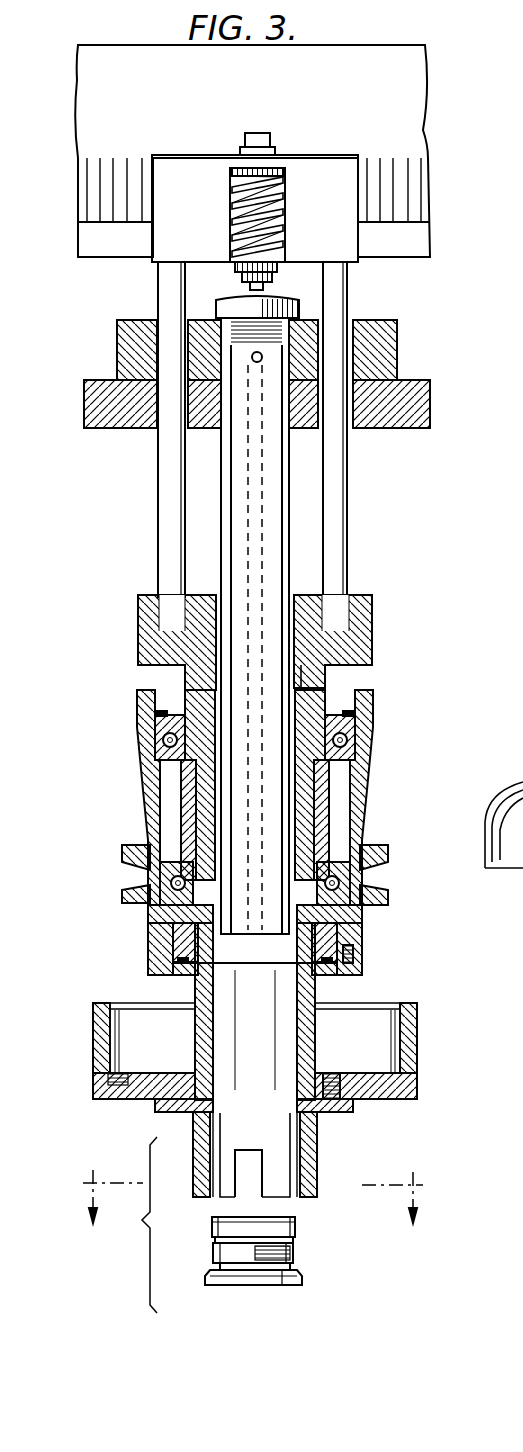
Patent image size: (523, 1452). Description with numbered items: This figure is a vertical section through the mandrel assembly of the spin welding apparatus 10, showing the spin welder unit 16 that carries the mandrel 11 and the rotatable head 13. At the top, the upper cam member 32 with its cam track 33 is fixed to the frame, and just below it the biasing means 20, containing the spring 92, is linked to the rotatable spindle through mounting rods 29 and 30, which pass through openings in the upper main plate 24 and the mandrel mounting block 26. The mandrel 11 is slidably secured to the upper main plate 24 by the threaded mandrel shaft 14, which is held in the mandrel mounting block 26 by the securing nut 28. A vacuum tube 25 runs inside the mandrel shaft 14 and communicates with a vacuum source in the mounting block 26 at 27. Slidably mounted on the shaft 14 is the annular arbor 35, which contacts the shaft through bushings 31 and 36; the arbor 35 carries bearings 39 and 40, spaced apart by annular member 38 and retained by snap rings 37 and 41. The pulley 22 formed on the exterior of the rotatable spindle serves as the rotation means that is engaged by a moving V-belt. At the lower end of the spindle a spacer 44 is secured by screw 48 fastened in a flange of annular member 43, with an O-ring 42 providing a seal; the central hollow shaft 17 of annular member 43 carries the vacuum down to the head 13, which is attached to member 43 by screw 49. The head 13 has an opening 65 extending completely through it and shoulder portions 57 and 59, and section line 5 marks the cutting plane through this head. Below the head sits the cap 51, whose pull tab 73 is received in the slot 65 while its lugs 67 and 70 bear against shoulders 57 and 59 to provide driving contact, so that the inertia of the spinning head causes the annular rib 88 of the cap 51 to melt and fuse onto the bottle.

The upper cam member 32 is at (408, 100).
The cam track 33 is at (393, 222).
The biasing means 20 is at (146, 265).
The spring 92 is at (277, 218).
The securing nut 28 is at (300, 312).
The mandrel mounting block 26 is at (397, 338).
The upper main plate 24 is at (420, 390).
The vacuum source connection 27 is at (252, 356).
The threaded mandrel shaft 14 is at (220, 507).
The vacuum tube 25 is at (248, 535).
The mounting rod 29 is at (163, 468).
The mounting rod 30 is at (337, 463).
The spin welder unit 16 is at (138, 620).
The mandrel 11 is at (373, 638).
The annular arbor 35 is at (360, 620).
The bushing 36 is at (310, 670).
The apparatus 10 is at (380, 740).
The snap ring 37 is at (158, 712).
The bearing 39 is at (163, 741).
The bushing 31 is at (217, 820).
The annular member 38 is at (327, 797).
The bearing 40 is at (168, 885).
The pulley 22 is at (357, 898).
The snap ring 41 is at (198, 913).
The O-ring 42 is at (193, 962).
The spacer 44 is at (307, 933).
The screw 48 is at (350, 970).
The central hollow shaft 17 is at (310, 1023).
The annular member 43 is at (413, 1100).
The screw 49 is at (357, 1108).
The head 13 is at (307, 1142).
The shoulder portion 57 is at (207, 1200).
The shoulder portion 59 is at (300, 1200).
The opening 65 is at (238, 1188).
The cap 51 is at (297, 1233).
The pull tab member 73 is at (290, 1255).
The lug 67 is at (207, 1275).
The lug 70 is at (305, 1280).
The annular rib 88 is at (277, 1283).
The section line 5- 5 is at (250, 1225).